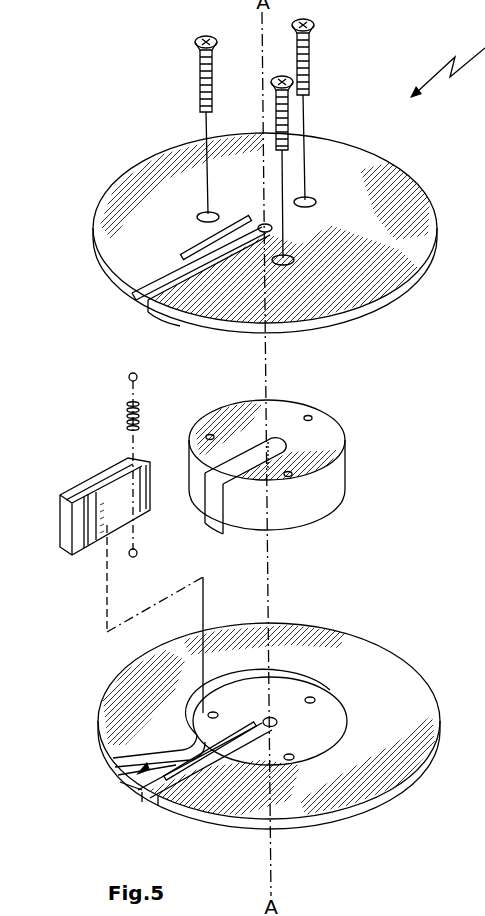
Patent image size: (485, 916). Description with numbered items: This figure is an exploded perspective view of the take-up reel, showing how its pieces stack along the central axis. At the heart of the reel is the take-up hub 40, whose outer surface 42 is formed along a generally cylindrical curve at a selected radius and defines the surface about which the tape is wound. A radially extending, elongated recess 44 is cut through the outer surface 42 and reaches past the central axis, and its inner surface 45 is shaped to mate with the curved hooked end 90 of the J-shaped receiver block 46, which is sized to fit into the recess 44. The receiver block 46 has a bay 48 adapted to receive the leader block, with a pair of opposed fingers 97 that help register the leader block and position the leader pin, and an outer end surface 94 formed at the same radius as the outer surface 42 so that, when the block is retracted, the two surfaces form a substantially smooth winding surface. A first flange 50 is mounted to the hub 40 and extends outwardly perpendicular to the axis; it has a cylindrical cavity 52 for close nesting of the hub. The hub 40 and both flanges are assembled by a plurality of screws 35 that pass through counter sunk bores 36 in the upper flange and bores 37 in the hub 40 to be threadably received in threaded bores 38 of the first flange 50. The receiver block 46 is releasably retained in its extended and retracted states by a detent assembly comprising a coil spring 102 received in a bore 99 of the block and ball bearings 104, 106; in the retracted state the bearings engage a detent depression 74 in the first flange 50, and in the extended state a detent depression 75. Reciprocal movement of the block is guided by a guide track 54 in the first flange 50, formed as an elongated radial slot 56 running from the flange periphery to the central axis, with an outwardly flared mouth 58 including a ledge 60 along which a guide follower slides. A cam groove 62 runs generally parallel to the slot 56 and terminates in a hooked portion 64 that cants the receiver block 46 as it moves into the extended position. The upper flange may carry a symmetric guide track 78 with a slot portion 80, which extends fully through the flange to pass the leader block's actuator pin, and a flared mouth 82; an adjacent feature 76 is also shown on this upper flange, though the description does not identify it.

The screws 35 is at (200, 62).
The counter sunk bores 36 is at (205, 213).
The bores 37 is at (209, 434).
The threaded bores 38 is at (212, 711).
The take-up hub 40 is at (375, 424).
The outer surface 42 is at (313, 510).
The recess 44 is at (204, 477).
The inner surface 45 is at (271, 440).
The receiver block 46 is at (86, 474).
The bay 48 is at (95, 542).
The first flange 50 is at (404, 635).
The cylindrical cavity 52 is at (330, 712).
The guide track 54 is at (142, 806).
The radial slot 56 is at (278, 730).
The flared mouth 58 is at (100, 742).
The ledge 60 is at (137, 778).
The cam groove 62 is at (332, 820).
The hooked portion 64 is at (105, 707).
The detent depression 74 is at (268, 716).
The detent depression 75 is at (186, 802).
The rib 76 is at (190, 253).
The guide track 78 is at (127, 301).
The slot portion 80 is at (285, 286).
The flared mouth 82 is at (140, 309).
The hooked end 90 is at (443, 210).
The outer end surface 94 is at (484, 315).
The fingers 97 is at (484, 816).
The bore 99 is at (150, 465).
The coil spring 102 is at (125, 418).
The ball bearing 104 is at (128, 380).
The ball bearing 106 is at (138, 555).